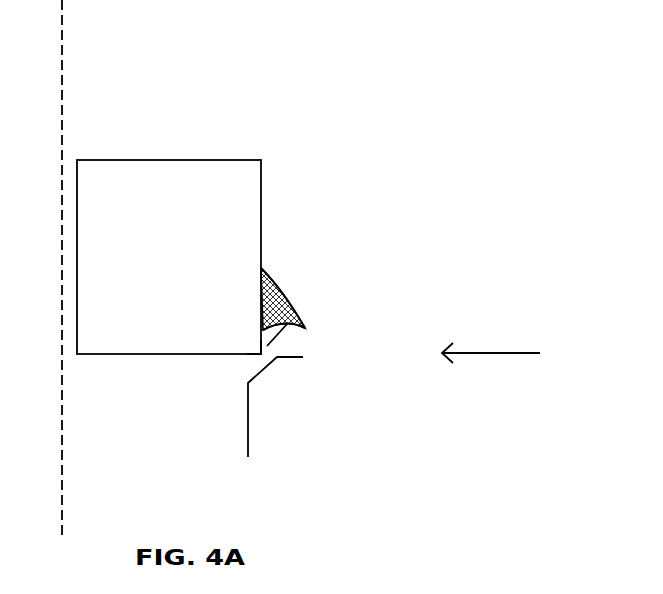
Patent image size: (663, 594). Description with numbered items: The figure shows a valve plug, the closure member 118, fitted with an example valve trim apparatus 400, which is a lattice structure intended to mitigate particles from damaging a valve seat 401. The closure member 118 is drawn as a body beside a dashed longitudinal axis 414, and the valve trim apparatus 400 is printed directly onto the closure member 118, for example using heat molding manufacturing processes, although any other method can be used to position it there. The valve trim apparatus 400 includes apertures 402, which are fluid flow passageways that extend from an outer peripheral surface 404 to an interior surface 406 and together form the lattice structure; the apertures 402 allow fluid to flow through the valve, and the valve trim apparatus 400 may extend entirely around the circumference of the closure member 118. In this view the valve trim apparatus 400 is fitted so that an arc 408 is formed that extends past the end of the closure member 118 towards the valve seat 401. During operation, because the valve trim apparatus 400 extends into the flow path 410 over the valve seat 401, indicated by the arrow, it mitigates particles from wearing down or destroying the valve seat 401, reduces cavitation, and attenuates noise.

The longitudinal axis 414 is at (62, 55).
The closure member 118 is at (97, 202).
The valve trim apparatus 400 is at (270, 292).
The outer peripheral surface 404 is at (267, 270).
The apertures 402 is at (295, 308).
The arc 408 is at (290, 325).
The interior surface 406 is at (261, 354).
The valve seat 401 is at (258, 398).
The flow path 410 is at (462, 355).